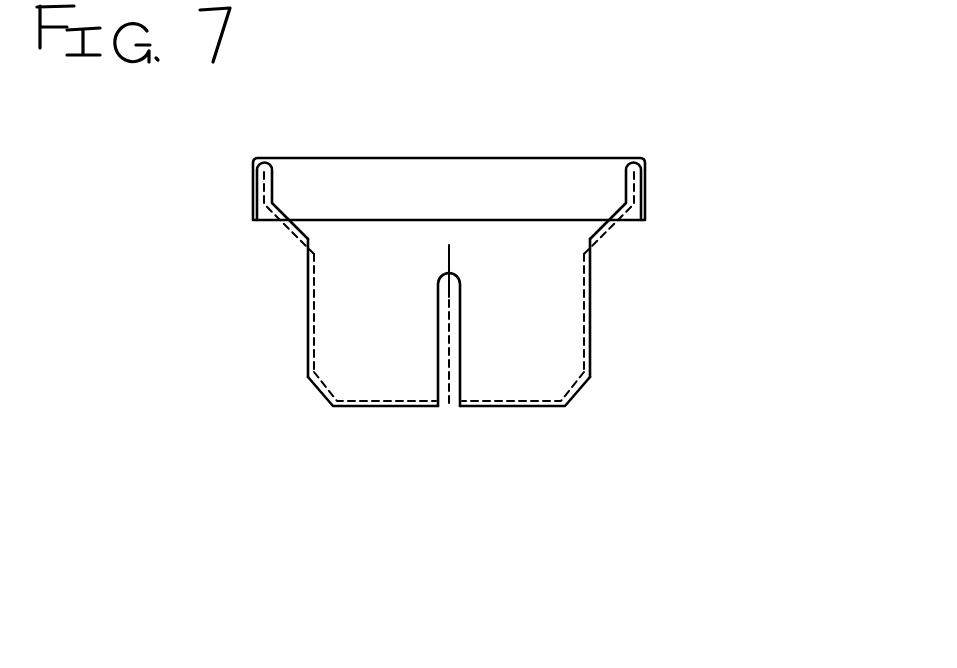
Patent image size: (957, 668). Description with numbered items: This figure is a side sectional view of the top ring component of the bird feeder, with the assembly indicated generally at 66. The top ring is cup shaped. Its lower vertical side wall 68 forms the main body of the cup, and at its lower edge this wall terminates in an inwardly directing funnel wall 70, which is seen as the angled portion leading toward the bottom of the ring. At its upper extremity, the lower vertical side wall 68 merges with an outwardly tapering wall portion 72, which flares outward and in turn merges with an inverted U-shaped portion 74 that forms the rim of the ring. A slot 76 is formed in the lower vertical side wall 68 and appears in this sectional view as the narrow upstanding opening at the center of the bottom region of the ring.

The cap 66 is at (562, 117).
The lower vertical side wall 68 is at (308, 297).
The funnel wall 70 is at (312, 388).
The outwardly tapering wall portion 72 is at (286, 206).
The inverted U-shaped portion 74 is at (672, 205).
The slot 76 is at (458, 427).